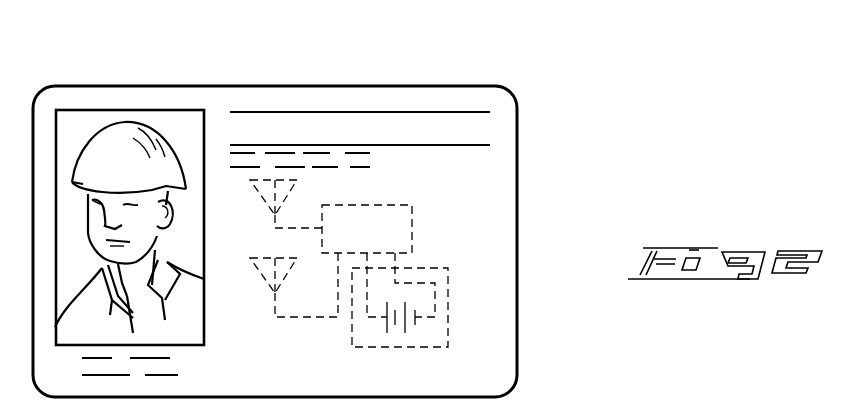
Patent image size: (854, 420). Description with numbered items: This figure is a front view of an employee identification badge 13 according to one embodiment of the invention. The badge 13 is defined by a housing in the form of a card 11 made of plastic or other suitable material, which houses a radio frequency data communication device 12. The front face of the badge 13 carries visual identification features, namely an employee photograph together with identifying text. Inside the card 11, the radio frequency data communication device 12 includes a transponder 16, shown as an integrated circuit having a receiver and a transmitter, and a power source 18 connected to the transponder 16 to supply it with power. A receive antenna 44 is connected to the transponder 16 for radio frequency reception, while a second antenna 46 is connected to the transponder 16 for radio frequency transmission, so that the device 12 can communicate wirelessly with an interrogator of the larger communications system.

The card 11 is at (480, 346).
The radio frequency data communication device 12 is at (482, 215).
The employee identification badge 13 is at (483, 63).
The transponder 16 is at (412, 228).
The power source 18 is at (448, 307).
The receive antenna 44 is at (257, 192).
The antenna 46 is at (258, 270).